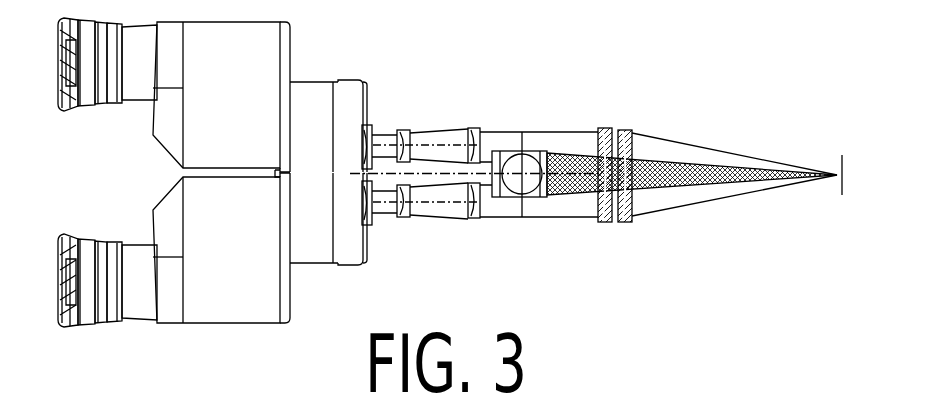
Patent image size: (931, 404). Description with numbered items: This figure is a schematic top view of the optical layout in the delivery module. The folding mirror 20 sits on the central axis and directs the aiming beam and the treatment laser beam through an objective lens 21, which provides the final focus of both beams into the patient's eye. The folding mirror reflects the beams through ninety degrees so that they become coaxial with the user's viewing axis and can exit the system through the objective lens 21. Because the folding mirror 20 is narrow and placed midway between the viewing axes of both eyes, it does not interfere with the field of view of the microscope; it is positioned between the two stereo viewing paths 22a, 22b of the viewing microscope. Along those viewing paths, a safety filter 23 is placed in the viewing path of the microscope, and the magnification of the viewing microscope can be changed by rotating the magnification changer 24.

The folding mirror 20 is at (530, 198).
The objective lens 21 is at (620, 223).
The stereo viewing path 22a is at (487, 137).
The stereo viewing path 22b is at (490, 212).
The safety filter 23 is at (398, 108).
The magnification changer 24 is at (398, 131).